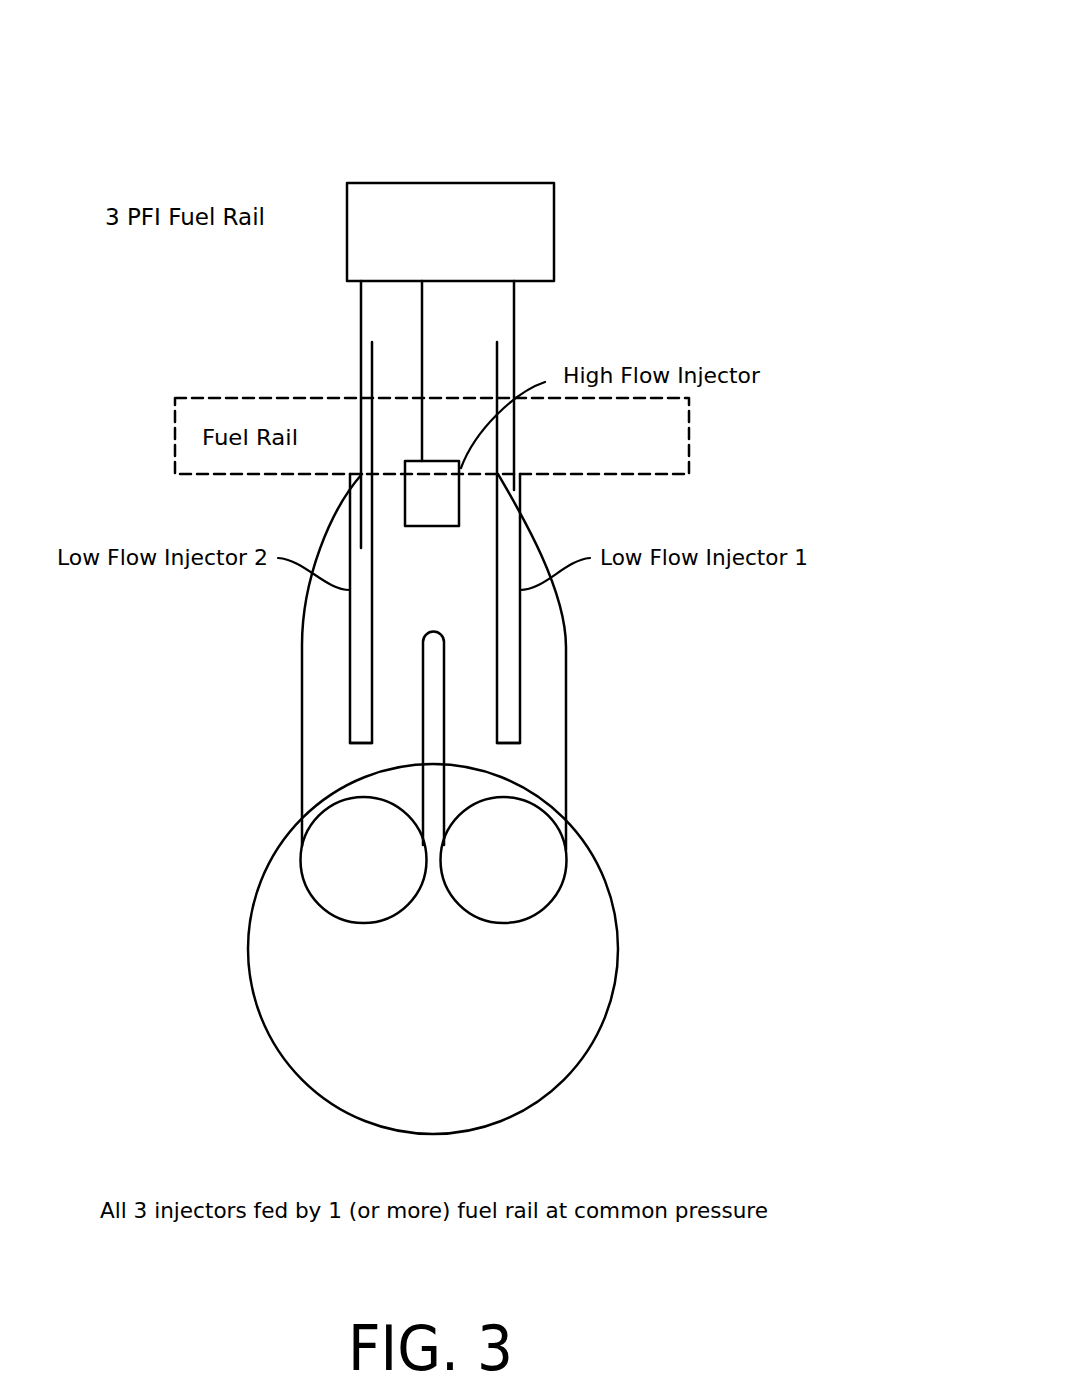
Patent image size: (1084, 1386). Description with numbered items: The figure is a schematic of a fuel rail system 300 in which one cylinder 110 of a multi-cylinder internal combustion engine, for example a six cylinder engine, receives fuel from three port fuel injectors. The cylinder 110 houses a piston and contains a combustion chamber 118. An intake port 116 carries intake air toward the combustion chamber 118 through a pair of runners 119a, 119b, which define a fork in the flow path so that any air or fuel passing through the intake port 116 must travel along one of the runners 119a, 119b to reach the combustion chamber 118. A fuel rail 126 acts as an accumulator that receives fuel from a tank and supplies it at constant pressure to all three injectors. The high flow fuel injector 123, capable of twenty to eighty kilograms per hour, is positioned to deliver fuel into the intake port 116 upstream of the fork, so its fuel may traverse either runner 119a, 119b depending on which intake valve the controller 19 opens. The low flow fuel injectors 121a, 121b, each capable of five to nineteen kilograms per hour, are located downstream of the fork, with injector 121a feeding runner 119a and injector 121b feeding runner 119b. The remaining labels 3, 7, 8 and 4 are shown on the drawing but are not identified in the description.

The fuel rail system 300 is at (805, 80).
The controller 19 is at (484, 181).
The fuel supply line 3 is at (360, 472).
The high flow injector supply line 7 is at (421, 459).
The fuel rail 126 is at (690, 467).
The intake port 116 is at (435, 400).
The high flow fuel injector 123 is at (420, 500).
The injector nozzle stem 8 is at (445, 527).
The low flow fuel injector 121a is at (353, 650).
The low flow fuel injector 121b is at (513, 650).
The injector tip 4 is at (352, 738).
The runner 119a is at (313, 747).
The runner 119b is at (567, 758).
The combustion chamber 118 is at (270, 980).
The cylinder 110 is at (455, 949).